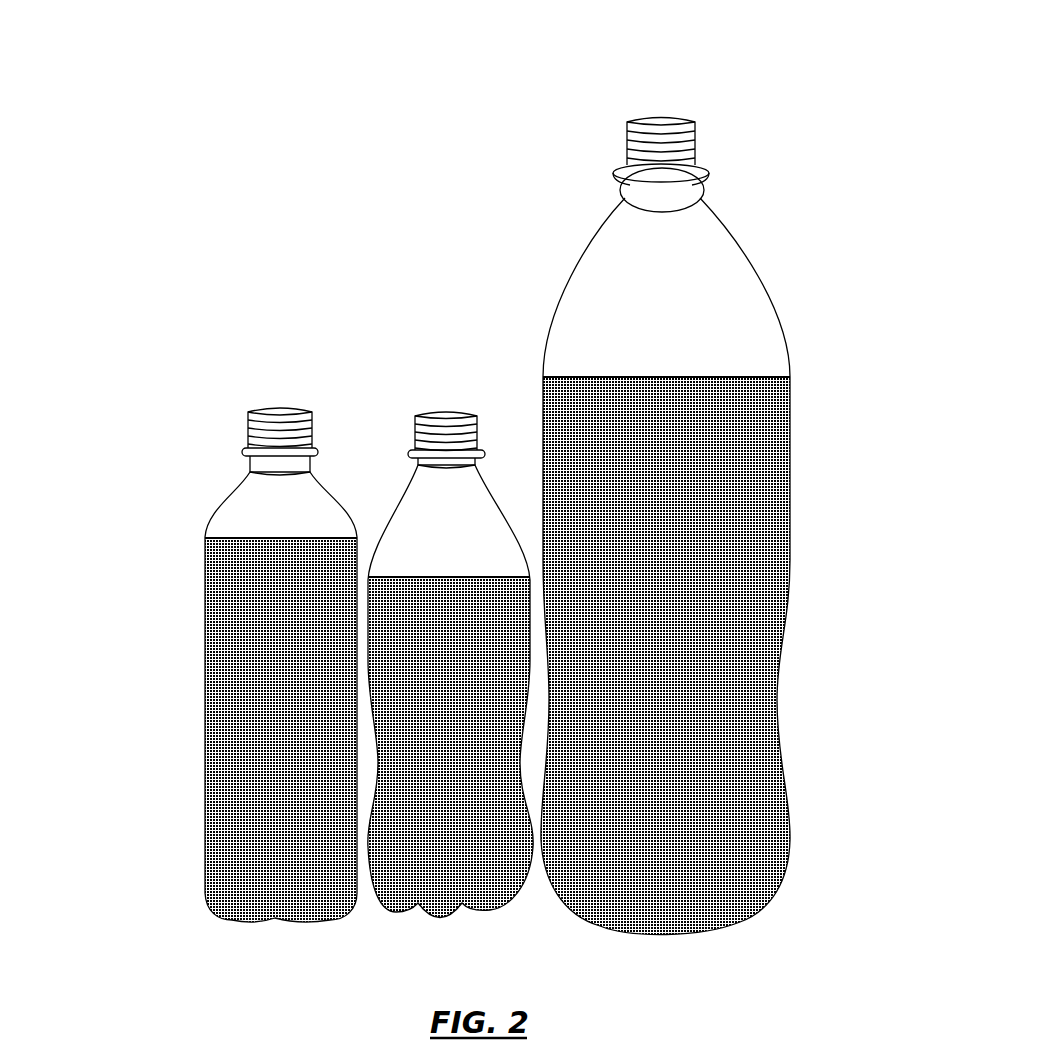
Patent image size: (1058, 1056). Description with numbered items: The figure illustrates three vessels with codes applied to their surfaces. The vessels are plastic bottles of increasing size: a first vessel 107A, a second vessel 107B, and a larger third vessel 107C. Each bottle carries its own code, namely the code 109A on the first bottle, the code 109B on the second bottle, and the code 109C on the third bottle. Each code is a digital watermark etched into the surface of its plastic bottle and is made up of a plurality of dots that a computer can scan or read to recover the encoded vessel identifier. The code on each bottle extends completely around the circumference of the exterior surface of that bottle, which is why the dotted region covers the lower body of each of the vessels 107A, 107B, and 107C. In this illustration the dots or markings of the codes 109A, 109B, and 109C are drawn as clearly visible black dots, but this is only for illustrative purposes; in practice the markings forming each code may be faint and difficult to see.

The vessel 107A is at (291, 408).
The code 109A is at (205, 580).
The vessel 107B is at (447, 412).
The code 109B is at (376, 868).
The vessel 107C is at (665, 120).
The code 109C is at (788, 364).